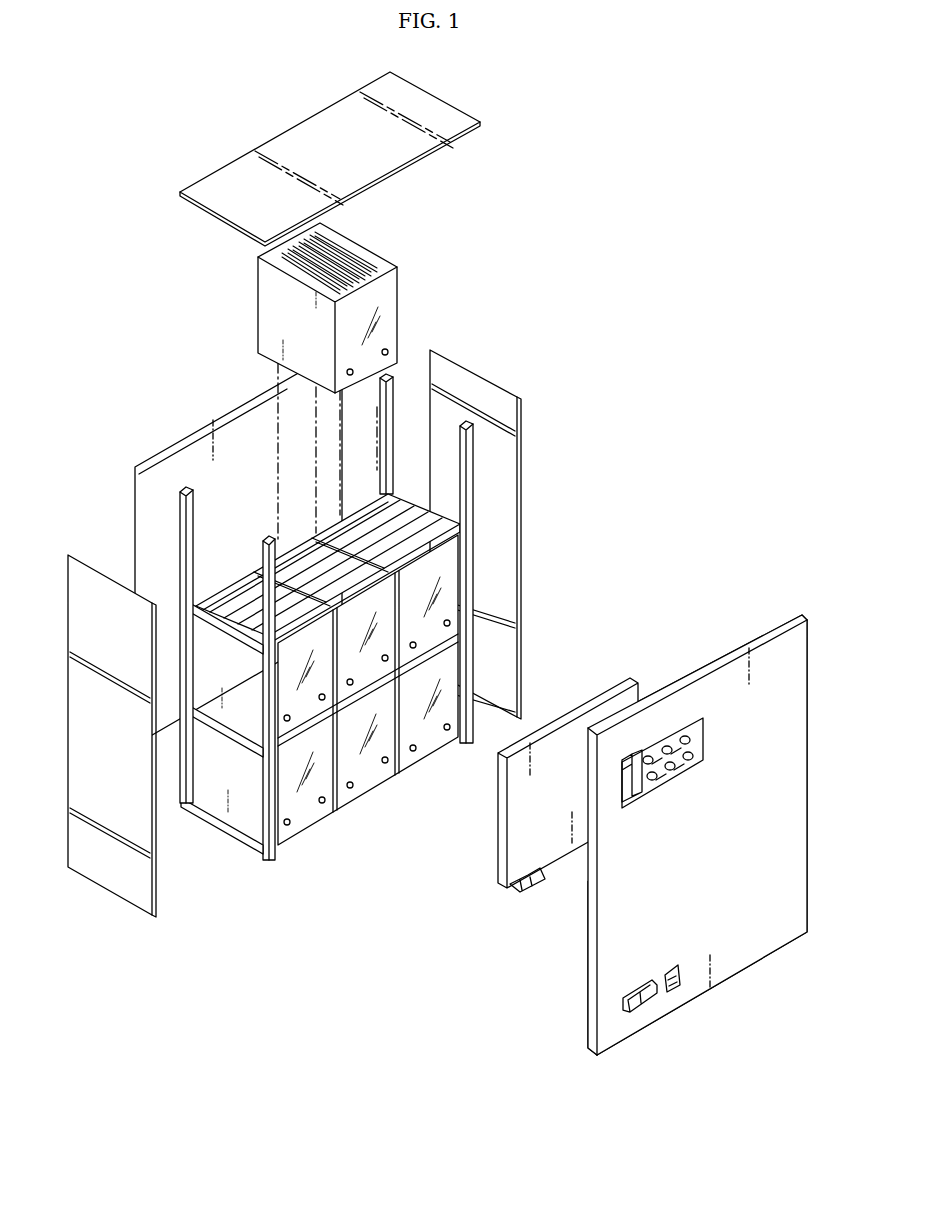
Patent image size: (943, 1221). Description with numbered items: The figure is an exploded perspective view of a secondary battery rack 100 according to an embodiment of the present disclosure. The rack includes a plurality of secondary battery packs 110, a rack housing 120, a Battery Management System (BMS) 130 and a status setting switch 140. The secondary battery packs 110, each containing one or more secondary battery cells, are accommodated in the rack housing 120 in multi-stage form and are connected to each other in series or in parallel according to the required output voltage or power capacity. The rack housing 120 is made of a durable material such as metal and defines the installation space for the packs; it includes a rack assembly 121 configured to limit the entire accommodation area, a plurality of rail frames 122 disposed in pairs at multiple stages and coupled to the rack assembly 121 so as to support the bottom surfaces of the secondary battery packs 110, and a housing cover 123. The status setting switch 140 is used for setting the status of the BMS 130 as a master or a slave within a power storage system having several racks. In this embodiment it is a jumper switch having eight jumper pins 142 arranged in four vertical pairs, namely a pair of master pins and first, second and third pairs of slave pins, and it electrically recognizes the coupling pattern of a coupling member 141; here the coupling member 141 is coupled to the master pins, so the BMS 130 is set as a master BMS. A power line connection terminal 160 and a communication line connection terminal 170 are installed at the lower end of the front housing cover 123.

The secondary battery rack 100 is at (722, 123).
The secondary battery pack 110 is at (263, 306).
The rack housing 120 is at (409, 509).
The rack assembly 121 is at (467, 507).
The rail frame 122 is at (420, 494).
The housing cover 123 is at (232, 213).
The Battery Management System (BMS) 130 is at (610, 690).
The status setting switch 140 is at (699, 770).
The coupling member 141 is at (638, 790).
The jumper pin 142 is at (690, 758).
The power line connection terminal 160 is at (643, 1008).
The communication line connection terminal 170 is at (680, 982).